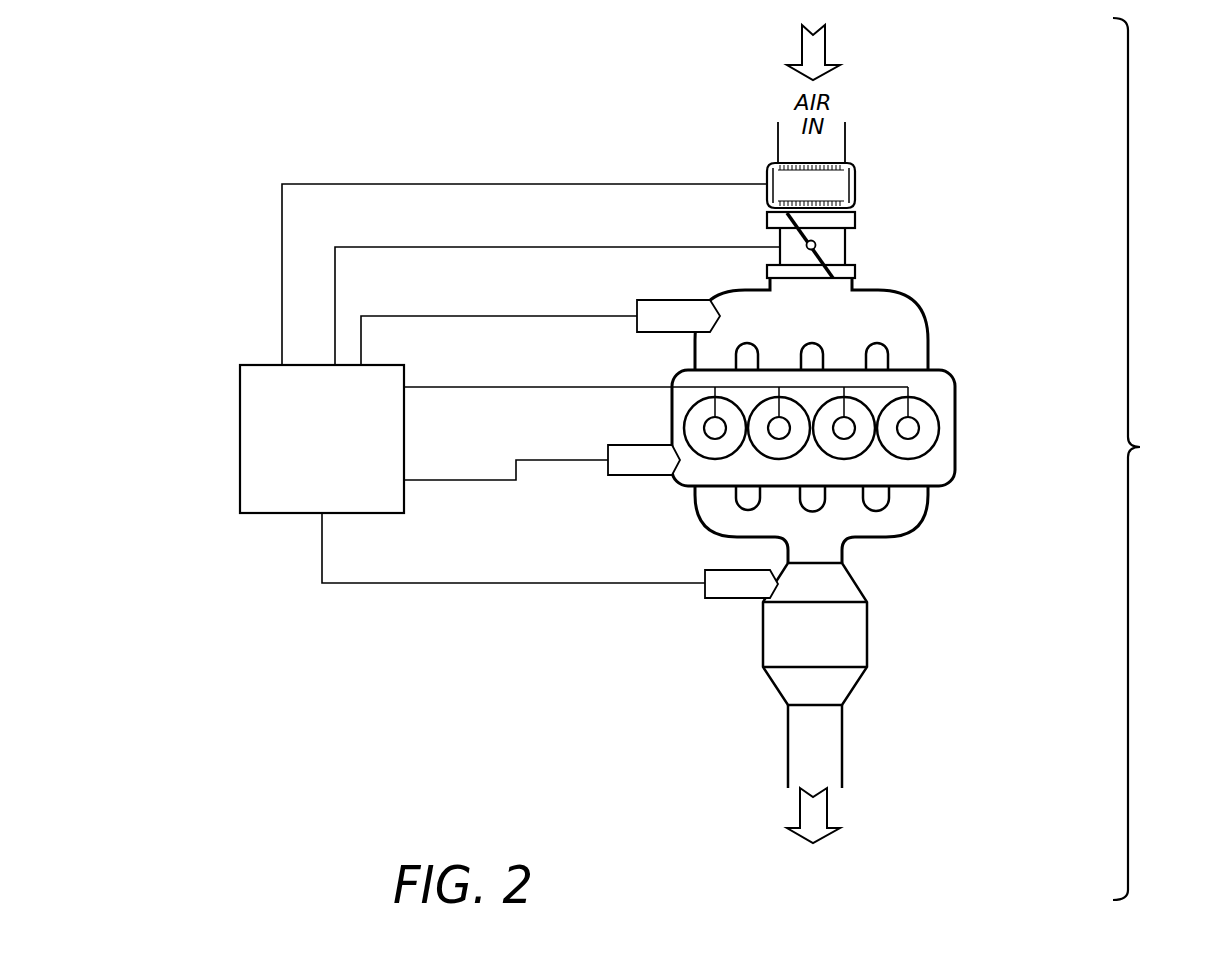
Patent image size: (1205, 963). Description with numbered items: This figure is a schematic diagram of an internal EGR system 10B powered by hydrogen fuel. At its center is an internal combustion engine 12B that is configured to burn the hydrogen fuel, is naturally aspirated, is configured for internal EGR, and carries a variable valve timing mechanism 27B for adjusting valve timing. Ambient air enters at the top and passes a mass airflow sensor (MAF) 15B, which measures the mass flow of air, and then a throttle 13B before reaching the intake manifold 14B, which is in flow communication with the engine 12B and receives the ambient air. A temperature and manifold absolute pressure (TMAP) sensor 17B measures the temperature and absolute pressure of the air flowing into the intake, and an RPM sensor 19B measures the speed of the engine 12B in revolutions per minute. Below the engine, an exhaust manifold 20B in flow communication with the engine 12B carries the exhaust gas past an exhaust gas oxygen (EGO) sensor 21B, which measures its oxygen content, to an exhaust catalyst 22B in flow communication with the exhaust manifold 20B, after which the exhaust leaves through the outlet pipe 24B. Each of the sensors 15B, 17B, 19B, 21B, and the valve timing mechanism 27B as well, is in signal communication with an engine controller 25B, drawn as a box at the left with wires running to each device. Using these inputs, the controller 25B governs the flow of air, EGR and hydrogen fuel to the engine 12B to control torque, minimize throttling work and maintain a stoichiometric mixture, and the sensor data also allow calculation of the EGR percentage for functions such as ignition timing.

The internal EGR system 10B is at (1153, 459).
The internal combustion engine 12B is at (955, 402).
The throttle 13B is at (853, 233).
The intake manifold 14B is at (918, 313).
The mass airflow sensor 15B is at (852, 165).
The temperature and manifold absolute pressure sensor 17B is at (668, 332).
The RPM sensor 19B is at (627, 475).
The exhaust manifold 20B is at (927, 517).
The exhaust gas oxygen sensor 21B is at (740, 598).
The exhaust catalyst 22B is at (868, 645).
The tailpipe 24B is at (843, 768).
The engine controller 25B is at (271, 516).
The variable valve timing mechanism 27B is at (904, 438).